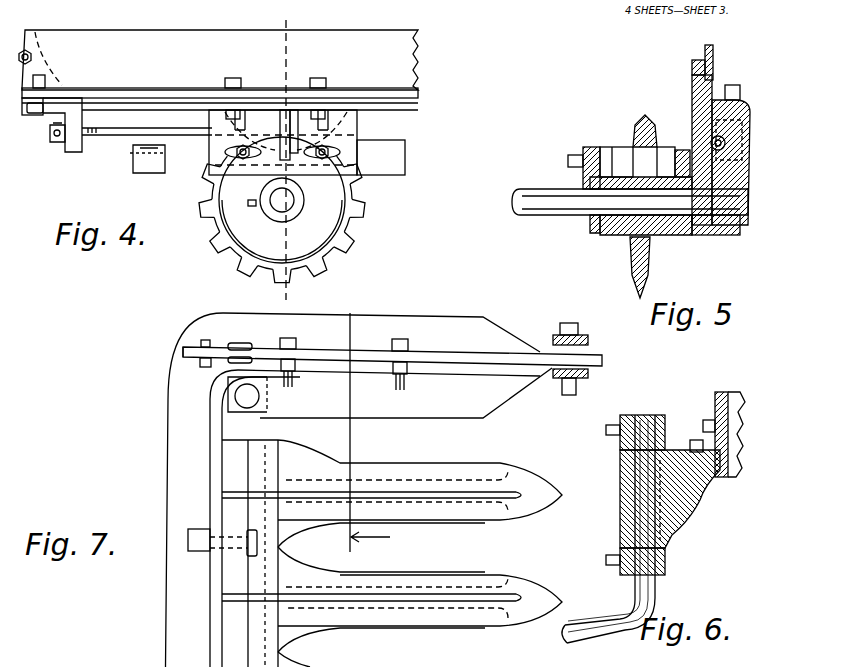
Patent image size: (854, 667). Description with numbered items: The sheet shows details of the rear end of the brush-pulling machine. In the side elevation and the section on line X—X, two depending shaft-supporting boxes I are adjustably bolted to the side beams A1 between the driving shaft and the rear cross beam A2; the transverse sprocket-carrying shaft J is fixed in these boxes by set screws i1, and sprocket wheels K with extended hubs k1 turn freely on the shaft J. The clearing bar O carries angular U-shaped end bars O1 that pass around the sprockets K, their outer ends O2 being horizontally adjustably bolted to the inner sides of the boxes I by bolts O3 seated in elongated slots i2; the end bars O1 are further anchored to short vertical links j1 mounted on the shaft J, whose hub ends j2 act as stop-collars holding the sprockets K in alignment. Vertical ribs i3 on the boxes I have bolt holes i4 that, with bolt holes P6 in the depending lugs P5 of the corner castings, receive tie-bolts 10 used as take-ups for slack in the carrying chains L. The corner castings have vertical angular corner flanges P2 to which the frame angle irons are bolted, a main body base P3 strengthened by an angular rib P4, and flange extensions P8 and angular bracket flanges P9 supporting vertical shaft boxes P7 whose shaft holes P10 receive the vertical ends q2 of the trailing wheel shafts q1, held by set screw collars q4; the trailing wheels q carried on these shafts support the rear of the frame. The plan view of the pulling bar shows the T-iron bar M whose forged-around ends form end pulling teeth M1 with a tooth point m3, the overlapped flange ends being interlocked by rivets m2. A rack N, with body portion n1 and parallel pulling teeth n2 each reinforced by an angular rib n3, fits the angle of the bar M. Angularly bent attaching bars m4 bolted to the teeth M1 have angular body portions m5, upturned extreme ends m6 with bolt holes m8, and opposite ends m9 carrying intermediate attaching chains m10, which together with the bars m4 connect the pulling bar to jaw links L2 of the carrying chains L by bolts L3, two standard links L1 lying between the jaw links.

In FIG. 4, the side beams A1 is at (182, 75).
In FIG. 5, the side beams A1 is at (713, 70).
In FIG. 6, the rear cross beam A2 is at (715, 400).
In FIG. 4, the shaft-supporting boxes I is at (343, 107).
In FIG. 5, the shaft-supporting boxes I is at (692, 105).
In FIG. 6, the vertical angular corner flanges P2 is at (722, 392).
In FIG. 4, the main body base P3 is at (50, 100).
In FIG. 5, the main body base P3 is at (748, 108).
In FIG. 4, the angular rib P4 is at (23, 115).
In FIG. 6, the angular rib P4 is at (730, 470).
In FIG. 4, the depending lugs P5 is at (78, 112).
In FIG. 4, the bolt hole P6 is at (88, 130).
In FIG. 6, the shaft supporting boxes P7 is at (622, 485).
In FIG. 6, the flange extensions P8 is at (622, 455).
In FIG. 6, the angular bracket flanges P9 is at (695, 512).
In FIG. 6, the vertical shaft holes P10 is at (622, 528).
In FIG. 4, the tie-bolts 10 is at (122, 135).
In FIG. 5, the tie-bolts 10 is at (735, 140).
In FIG. 4, the section line X— X is at (222, 303).
In FIG. 4, the clearing bar O is at (135, 152).
In FIG. 4, the U-shaped end bars O1 is at (178, 162).
In FIG. 5, the U-shaped end bars O1 is at (618, 148).
In FIG. 4, the outer ends O2 is at (380, 170).
In FIG. 5, the outer ends O2 is at (695, 140).
In FIG. 4, the bolts O3 is at (335, 148).
In FIG. 5, the bolts O3 is at (680, 150).
In FIG. 4, the set screws i1 is at (248, 205).
In FIG. 4, the elongated slots i2 is at (335, 155).
In FIG. 5, the elongated slots i2 is at (692, 68).
In FIG. 4, the vertical ribs i3 is at (295, 120).
In FIG. 5, the vertical ribs i3 is at (712, 160).
In FIG. 4, the bolt hole i4 is at (282, 125).
In FIG. 5, the bolt hole i4 is at (726, 145).
In FIG. 4, the sprocket-carrying shaft J is at (275, 208).
In FIG. 5, the sprocket-carrying shaft J is at (535, 190).
In FIG. 5, the vertical links j1 is at (598, 150).
In FIG. 5, the hub ends j2 is at (595, 225).
In FIG. 4, the sprocket wheels K is at (330, 232).
In FIG. 5, the sprocket wheels K is at (636, 260).
In FIG. 5, the extended hubs k1 is at (605, 232).
In FIG. 7, the pulling bar M is at (168, 575).
In FIG. 7, the end pulling teeth M1 is at (470, 405).
In FIG. 7, the rivets m2 is at (259, 397).
In FIG. 7, the tooth point m3 is at (553, 378).
In FIG. 7, the attaching bars m4 is at (305, 348).
In FIG. 7, the angular body portions m5 is at (487, 356).
In FIG. 7, the extreme ends m6 is at (605, 358).
In FIG. 7, the bolt holes m8 is at (585, 358).
In FIG. 7, the opposite ends m9 is at (185, 340).
In FIG. 7, the intermediate attaching chains m10 is at (215, 352).
In FIG. 7, the carrying chains L is at (419, 659).
In FIG. 7, the standard detachable links L1 is at (376, 659).
In FIG. 7, the joint-pin jaw links L2 is at (582, 338).
In FIG. 7, the bolt L3 is at (565, 322).
In FIG. 7, the rack of pulling teeth N is at (228, 600).
In FIG. 7, the rack body portion n1 is at (250, 630).
In FIG. 7, the pulling teeth n2 is at (458, 515).
In FIG. 7, the angular rib n3 is at (406, 495).
In FIG. 7, the part U is at (97, 666).
In FIG. 6, the trailing wheels q is at (608, 529).
In FIG. 6, the trailing wheel shafts q1 is at (590, 622).
In FIG. 6, the vertical shaft ends q2 is at (635, 505).
In FIG. 6, the set screw collars q4 is at (625, 415).